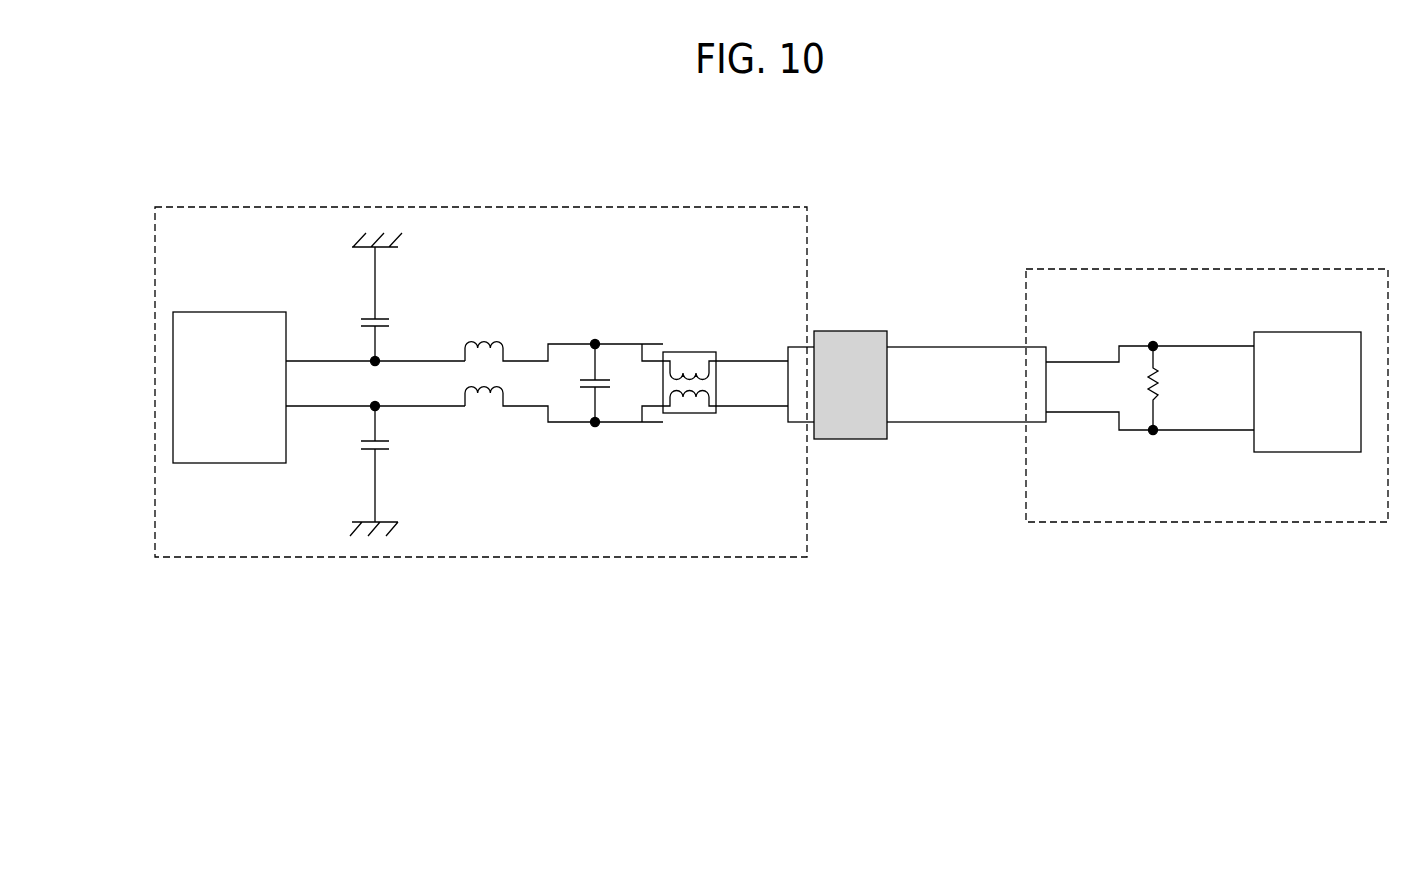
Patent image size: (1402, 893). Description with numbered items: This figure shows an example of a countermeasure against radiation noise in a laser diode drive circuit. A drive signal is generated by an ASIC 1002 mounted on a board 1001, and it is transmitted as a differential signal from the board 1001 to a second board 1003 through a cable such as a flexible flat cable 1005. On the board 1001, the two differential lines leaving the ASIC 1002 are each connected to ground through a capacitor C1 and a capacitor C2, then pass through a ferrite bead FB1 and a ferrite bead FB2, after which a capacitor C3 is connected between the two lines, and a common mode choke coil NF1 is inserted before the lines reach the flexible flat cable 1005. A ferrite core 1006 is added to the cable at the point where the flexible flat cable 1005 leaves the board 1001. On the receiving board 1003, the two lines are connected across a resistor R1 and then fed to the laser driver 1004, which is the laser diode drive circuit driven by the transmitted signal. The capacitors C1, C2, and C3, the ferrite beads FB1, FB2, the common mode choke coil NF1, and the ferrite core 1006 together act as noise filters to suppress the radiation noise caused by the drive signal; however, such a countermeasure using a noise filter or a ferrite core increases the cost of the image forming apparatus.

The board 1001 is at (455, 207).
The ASIC 1002 is at (226, 312).
The board 1003 is at (1190, 269).
The laser driver 1004 is at (1310, 452).
The flexible flat cable 1005 is at (946, 422).
The ferrite core 1006 is at (853, 331).
The capacitor C1 is at (365, 299).
The capacitor C2 is at (363, 469).
The capacitor C3 is at (578, 383).
The ferrite bead FB1 is at (564, 338).
The ferrite bead FB2 is at (564, 414).
The common mode choke coil NF1 is at (689, 368).
The resistor R1 is at (1170, 388).